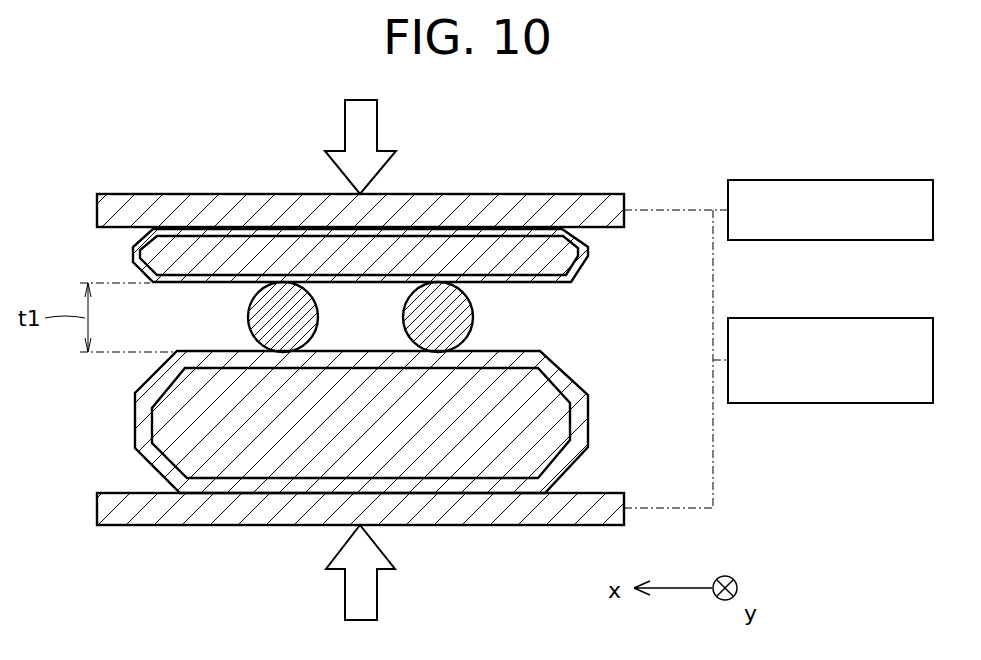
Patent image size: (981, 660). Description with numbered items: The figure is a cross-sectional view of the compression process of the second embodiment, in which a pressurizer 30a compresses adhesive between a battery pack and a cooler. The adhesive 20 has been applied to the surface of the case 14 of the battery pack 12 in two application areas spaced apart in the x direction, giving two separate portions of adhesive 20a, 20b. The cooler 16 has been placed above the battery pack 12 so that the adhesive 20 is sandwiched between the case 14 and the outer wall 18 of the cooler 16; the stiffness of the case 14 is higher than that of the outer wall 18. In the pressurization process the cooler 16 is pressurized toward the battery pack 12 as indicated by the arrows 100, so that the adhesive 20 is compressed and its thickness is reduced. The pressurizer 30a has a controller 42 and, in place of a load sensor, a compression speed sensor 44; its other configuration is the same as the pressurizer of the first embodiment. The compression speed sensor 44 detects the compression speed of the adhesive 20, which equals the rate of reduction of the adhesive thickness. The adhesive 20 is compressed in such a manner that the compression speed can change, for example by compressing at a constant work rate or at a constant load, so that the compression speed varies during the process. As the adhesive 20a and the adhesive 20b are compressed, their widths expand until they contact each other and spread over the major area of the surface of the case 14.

The arrows 100 is at (377, 118).
The battery pack 12 is at (612, 454).
The case 14 is at (580, 422).
The cooler 16 is at (612, 250).
The outer wall 18 is at (585, 256).
The adhesive 20 is at (400, 317).
The adhesive 20a is at (268, 318).
The adhesive 20b is at (455, 313).
The pressurizer 30a is at (775, 160).
The controller 42 is at (873, 180).
The compression speed sensor 44 is at (873, 318).